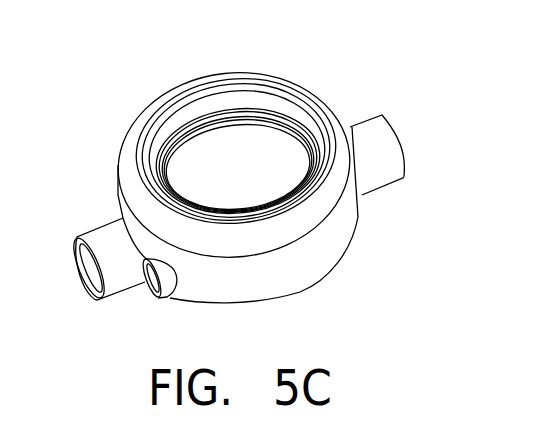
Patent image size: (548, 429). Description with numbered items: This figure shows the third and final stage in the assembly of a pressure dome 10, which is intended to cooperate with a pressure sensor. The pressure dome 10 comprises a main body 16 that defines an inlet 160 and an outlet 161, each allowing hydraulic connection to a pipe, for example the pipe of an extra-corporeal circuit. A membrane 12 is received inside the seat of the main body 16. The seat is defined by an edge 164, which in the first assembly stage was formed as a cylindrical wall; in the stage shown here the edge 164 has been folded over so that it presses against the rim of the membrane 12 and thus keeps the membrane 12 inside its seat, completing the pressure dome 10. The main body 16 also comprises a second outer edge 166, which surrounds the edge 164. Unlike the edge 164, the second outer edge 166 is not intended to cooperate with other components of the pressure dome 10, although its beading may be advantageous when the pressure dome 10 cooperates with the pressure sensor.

The pressure dome 10 is at (242, 187).
The membrane 12 is at (247, 180).
The main body 16 is at (187, 280).
The inlet 160 is at (92, 270).
The outlet 161 is at (377, 156).
The edge 164 is at (230, 119).
The second outer edge 166 is at (292, 74).